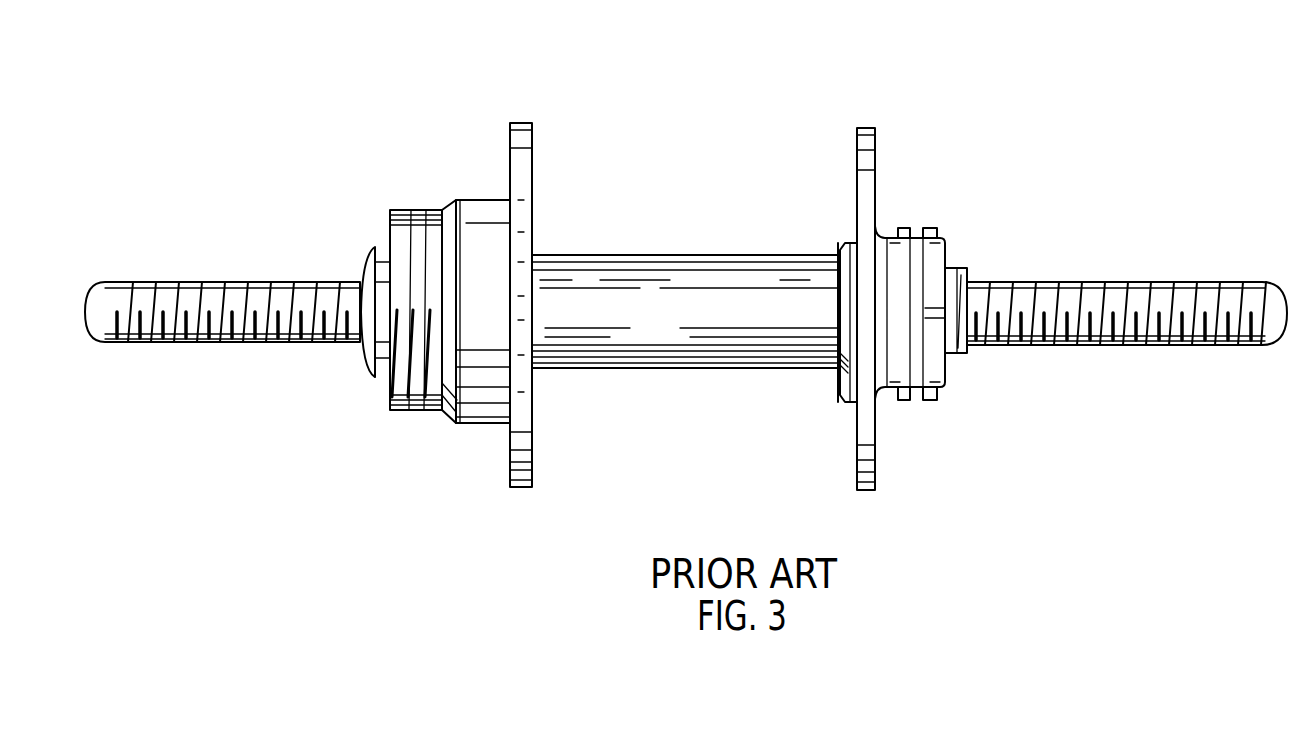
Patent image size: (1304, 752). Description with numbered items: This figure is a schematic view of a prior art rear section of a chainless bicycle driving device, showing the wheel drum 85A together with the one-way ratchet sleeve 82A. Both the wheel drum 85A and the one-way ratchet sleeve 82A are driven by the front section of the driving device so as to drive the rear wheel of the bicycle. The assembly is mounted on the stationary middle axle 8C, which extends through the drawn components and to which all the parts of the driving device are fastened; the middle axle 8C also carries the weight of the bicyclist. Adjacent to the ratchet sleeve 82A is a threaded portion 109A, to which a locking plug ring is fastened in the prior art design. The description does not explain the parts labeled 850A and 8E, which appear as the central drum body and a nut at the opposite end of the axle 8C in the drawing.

The wheel drum 85A is at (701, 281).
The hub body (shell) 850A is at (680, 270).
The left lock nut 8E is at (465, 425).
The one-way ratchet sleeve 82A is at (918, 402).
The threaded portion 109A is at (960, 267).
The middle axle 8C is at (1137, 282).